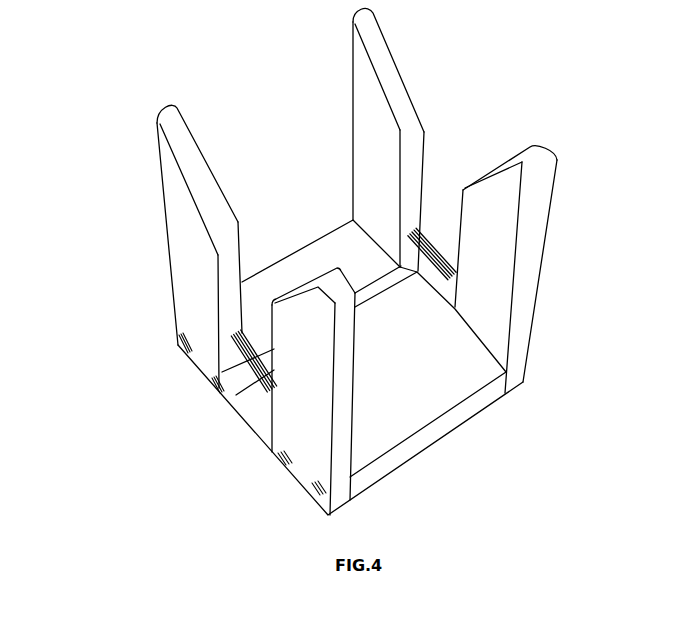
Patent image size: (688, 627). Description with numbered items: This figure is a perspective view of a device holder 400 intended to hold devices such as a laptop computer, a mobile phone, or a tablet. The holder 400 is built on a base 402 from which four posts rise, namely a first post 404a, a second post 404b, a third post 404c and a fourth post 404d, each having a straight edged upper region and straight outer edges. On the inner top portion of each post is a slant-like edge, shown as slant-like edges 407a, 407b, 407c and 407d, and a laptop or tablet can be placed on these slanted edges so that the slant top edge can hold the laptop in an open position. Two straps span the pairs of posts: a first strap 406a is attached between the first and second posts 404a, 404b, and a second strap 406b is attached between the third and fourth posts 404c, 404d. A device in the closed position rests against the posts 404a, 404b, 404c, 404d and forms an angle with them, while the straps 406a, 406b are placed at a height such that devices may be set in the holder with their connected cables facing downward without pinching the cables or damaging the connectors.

The device holder 400 is at (91, 56).
The base 402 is at (248, 428).
The first post 404a is at (181, 246).
The second post 404b is at (270, 352).
The third post 404c is at (367, 139).
The fourth post 404d is at (530, 259).
The first strap 406a is at (248, 368).
The second strap 406b is at (430, 232).
The slant-like edge 407a is at (200, 163).
The slant-like edge 407b is at (294, 293).
The slant-like edge 407c is at (393, 72).
The slant-like edge 407d is at (489, 174).